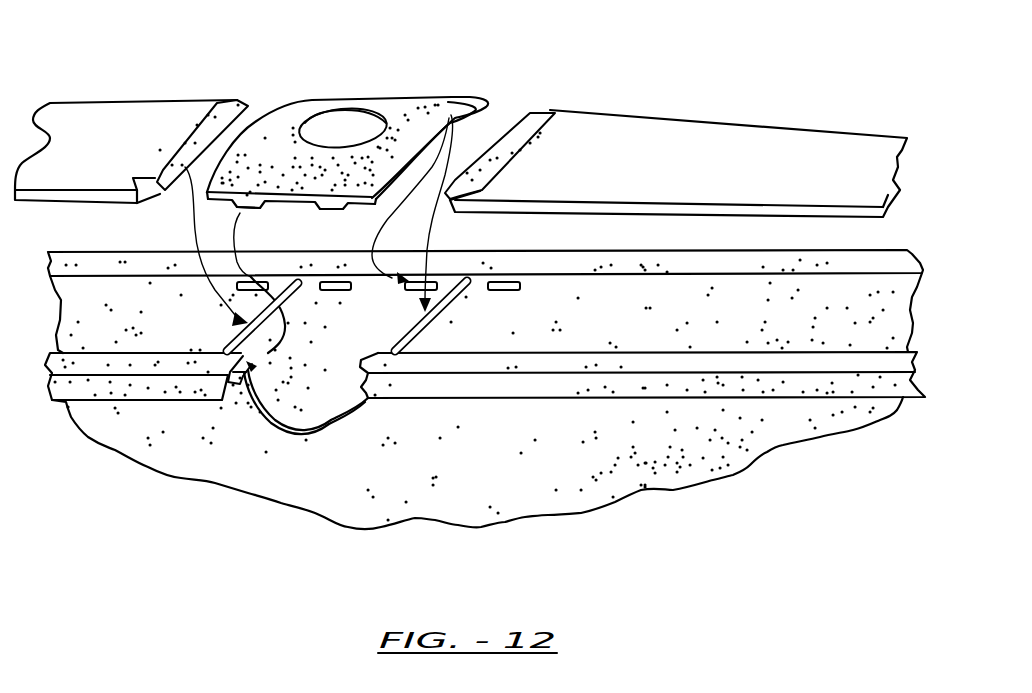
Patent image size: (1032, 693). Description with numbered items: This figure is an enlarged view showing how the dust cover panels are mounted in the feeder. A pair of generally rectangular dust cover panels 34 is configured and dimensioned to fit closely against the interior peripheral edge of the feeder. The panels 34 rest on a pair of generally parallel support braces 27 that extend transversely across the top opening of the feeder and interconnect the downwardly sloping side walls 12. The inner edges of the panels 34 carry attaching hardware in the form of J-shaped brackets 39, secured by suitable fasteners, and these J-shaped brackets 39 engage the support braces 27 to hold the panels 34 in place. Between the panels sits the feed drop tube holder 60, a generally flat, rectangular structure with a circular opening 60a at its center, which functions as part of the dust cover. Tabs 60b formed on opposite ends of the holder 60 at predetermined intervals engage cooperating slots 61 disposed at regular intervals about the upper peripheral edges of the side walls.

The side wall 12 is at (613, 290).
The support brace 27 is at (230, 343).
The dust cover panel 34 is at (149, 113).
The J-shaped bracket 39 is at (166, 153).
The feed drop tube holder 60 is at (300, 110).
The circular opening 60a is at (345, 128).
The tab 60b is at (329, 209).
The slot 61 is at (338, 290).